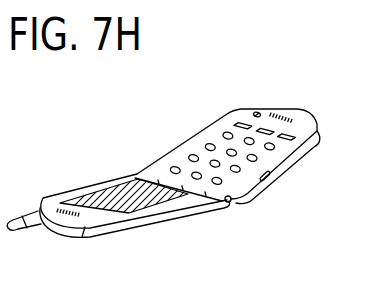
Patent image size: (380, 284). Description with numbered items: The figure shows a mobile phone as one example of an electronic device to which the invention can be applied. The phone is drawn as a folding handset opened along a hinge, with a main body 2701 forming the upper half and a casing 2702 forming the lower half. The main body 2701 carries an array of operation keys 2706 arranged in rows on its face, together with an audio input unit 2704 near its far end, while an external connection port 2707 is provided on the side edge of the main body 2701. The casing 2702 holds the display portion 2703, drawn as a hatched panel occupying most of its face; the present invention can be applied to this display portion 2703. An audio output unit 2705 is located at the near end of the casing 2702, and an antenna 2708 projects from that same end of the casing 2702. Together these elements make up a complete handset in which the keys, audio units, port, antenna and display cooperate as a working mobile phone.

The main body 2701 is at (161, 166).
The casing 2702 is at (137, 224).
The display portion 2703 is at (176, 200).
The audio input unit 2704 is at (268, 109).
The audio output unit 2705 is at (84, 235).
The operation keys 2706 is at (201, 141).
The external connection port 2707 is at (271, 179).
The antenna 2708 is at (20, 232).